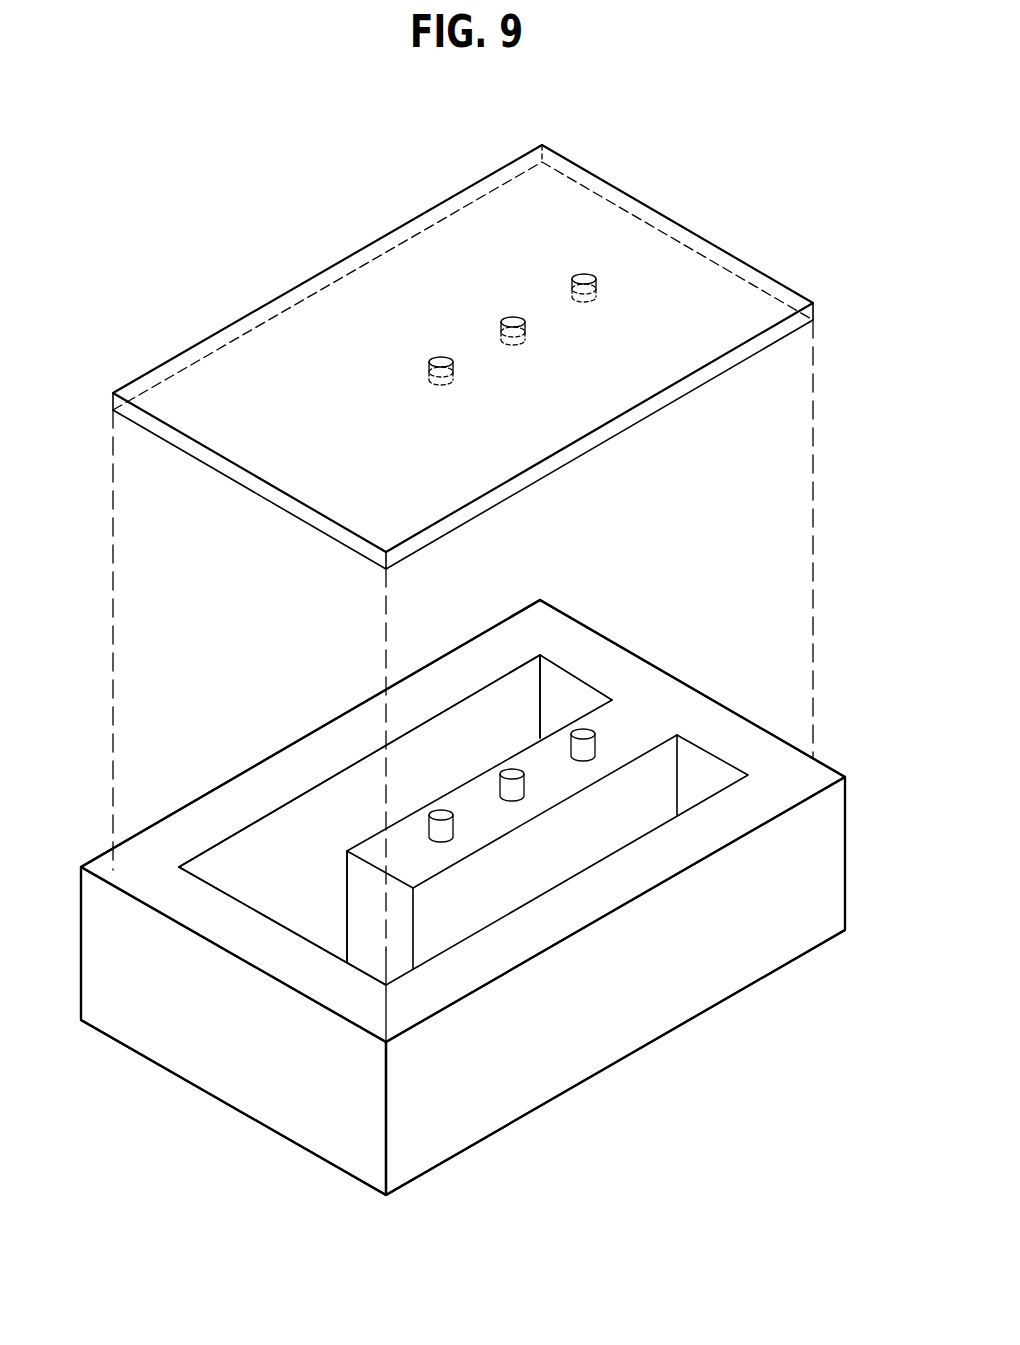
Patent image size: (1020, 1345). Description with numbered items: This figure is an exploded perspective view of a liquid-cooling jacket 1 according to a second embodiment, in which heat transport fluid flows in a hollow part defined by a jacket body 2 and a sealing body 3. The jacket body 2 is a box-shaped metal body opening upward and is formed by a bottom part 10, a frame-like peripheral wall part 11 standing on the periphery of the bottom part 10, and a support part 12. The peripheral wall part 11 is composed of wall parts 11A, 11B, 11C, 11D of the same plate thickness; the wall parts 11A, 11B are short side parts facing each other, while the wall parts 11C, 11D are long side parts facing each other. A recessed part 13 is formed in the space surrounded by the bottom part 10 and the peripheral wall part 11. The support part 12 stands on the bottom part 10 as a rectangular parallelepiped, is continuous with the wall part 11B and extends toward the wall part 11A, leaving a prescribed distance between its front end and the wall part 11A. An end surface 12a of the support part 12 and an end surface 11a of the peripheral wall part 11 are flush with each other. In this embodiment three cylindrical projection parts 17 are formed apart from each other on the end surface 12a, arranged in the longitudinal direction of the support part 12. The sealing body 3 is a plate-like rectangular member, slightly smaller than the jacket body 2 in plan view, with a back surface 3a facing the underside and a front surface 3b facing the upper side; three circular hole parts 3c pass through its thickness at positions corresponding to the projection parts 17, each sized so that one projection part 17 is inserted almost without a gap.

The liquid-cooling jacket 1 is at (217, 162).
The jacket body 2 is at (542, 1130).
The sealing body 3 is at (452, 175).
The back surface 3a is at (614, 436).
The front surface 3b is at (400, 277).
The hole parts 3c is at (584, 281).
The bottom part 10 is at (317, 923).
The peripheral wall part 11 is at (258, 780).
The wall part 11A is at (258, 1075).
The wall part 11B is at (672, 676).
The wall part 11C is at (348, 712).
The wall part 11D is at (583, 1035).
The end surface 11a is at (663, 847).
The support part 12 is at (482, 818).
The end surface 12a is at (512, 794).
The recessed part 13 is at (290, 860).
The projection parts 17 is at (441, 813).